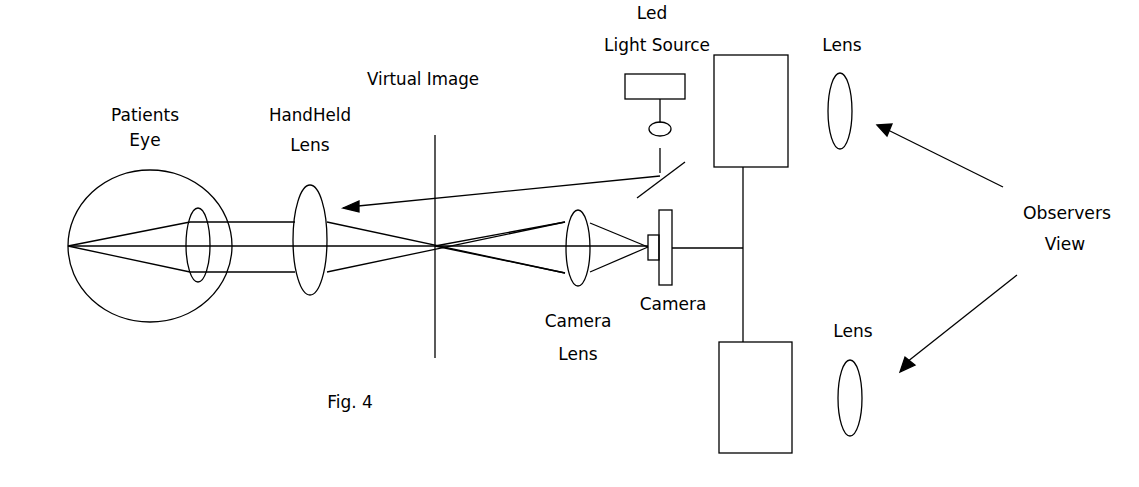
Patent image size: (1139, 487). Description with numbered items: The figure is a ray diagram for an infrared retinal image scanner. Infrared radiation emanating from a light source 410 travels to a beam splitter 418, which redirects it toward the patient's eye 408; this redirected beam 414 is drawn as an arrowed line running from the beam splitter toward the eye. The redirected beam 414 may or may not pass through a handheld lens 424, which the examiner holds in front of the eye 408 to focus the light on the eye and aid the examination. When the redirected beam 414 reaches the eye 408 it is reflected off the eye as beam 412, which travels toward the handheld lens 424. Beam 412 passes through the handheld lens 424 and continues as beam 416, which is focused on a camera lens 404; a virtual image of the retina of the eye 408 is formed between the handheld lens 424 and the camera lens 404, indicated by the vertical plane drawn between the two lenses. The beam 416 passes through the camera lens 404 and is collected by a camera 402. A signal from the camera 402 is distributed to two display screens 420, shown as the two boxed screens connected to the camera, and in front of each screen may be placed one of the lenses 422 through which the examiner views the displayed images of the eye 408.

The camera 402 is at (672, 262).
The camera lens 404 is at (568, 277).
The eye 408 is at (95, 300).
The light source 410 is at (625, 92).
The beam 412 is at (253, 221).
The redirected beam 414 is at (507, 190).
The beam 416 is at (513, 262).
The beam splitter 418 is at (661, 184).
The display screen 420 is at (737, 55).
The lenses 422 is at (852, 93).
The handheld lens 424 is at (316, 295).